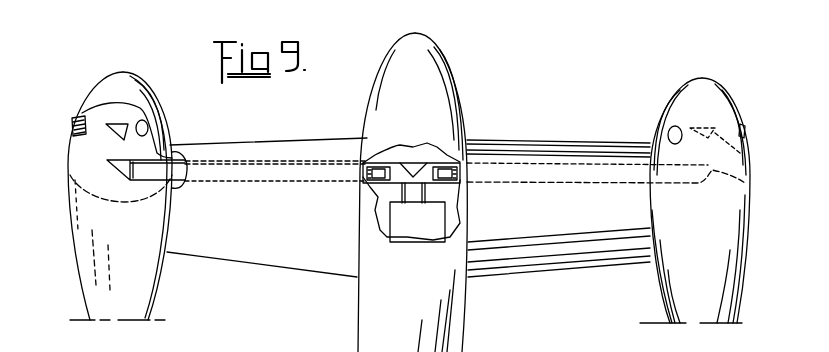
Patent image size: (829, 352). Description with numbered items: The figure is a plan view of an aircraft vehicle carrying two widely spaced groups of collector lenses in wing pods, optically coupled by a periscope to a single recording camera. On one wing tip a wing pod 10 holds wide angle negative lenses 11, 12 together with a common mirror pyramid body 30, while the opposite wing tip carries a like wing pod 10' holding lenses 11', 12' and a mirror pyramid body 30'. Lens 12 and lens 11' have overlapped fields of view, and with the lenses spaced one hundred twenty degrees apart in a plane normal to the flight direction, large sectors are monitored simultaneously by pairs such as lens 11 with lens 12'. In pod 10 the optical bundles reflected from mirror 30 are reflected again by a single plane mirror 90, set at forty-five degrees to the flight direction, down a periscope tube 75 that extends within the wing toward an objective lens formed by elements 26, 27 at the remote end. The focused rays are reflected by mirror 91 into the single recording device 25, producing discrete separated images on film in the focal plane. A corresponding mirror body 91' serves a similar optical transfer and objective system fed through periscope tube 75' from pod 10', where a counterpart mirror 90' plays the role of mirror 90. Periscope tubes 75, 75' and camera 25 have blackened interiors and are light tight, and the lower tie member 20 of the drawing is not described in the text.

The wing pod 10 is at (133, 196).
The wide angle negative lens 11 is at (50, 114).
The wide angle negative lens 12 is at (163, 110).
The mirror pyramid body 30 is at (109, 97).
The plane mirror 90 is at (106, 181).
The periscope tube 75 is at (268, 145).
The lower tie member 20 is at (280, 260).
The mirror 91 is at (397, 167).
The mirror body 91' is at (464, 137).
The objective lens element 26 is at (368, 185).
The objective lens element 27 is at (388, 170).
The recording device 25 is at (434, 236).
The periscope tube 75' is at (587, 141).
The connector block (second) 90' is at (627, 185).
The wing pod 10' is at (681, 200).
The wide angle negative lens 11' is at (658, 116).
The wide angle negative lens 12' is at (759, 113).
The mirror pyramid body 30' is at (732, 146).